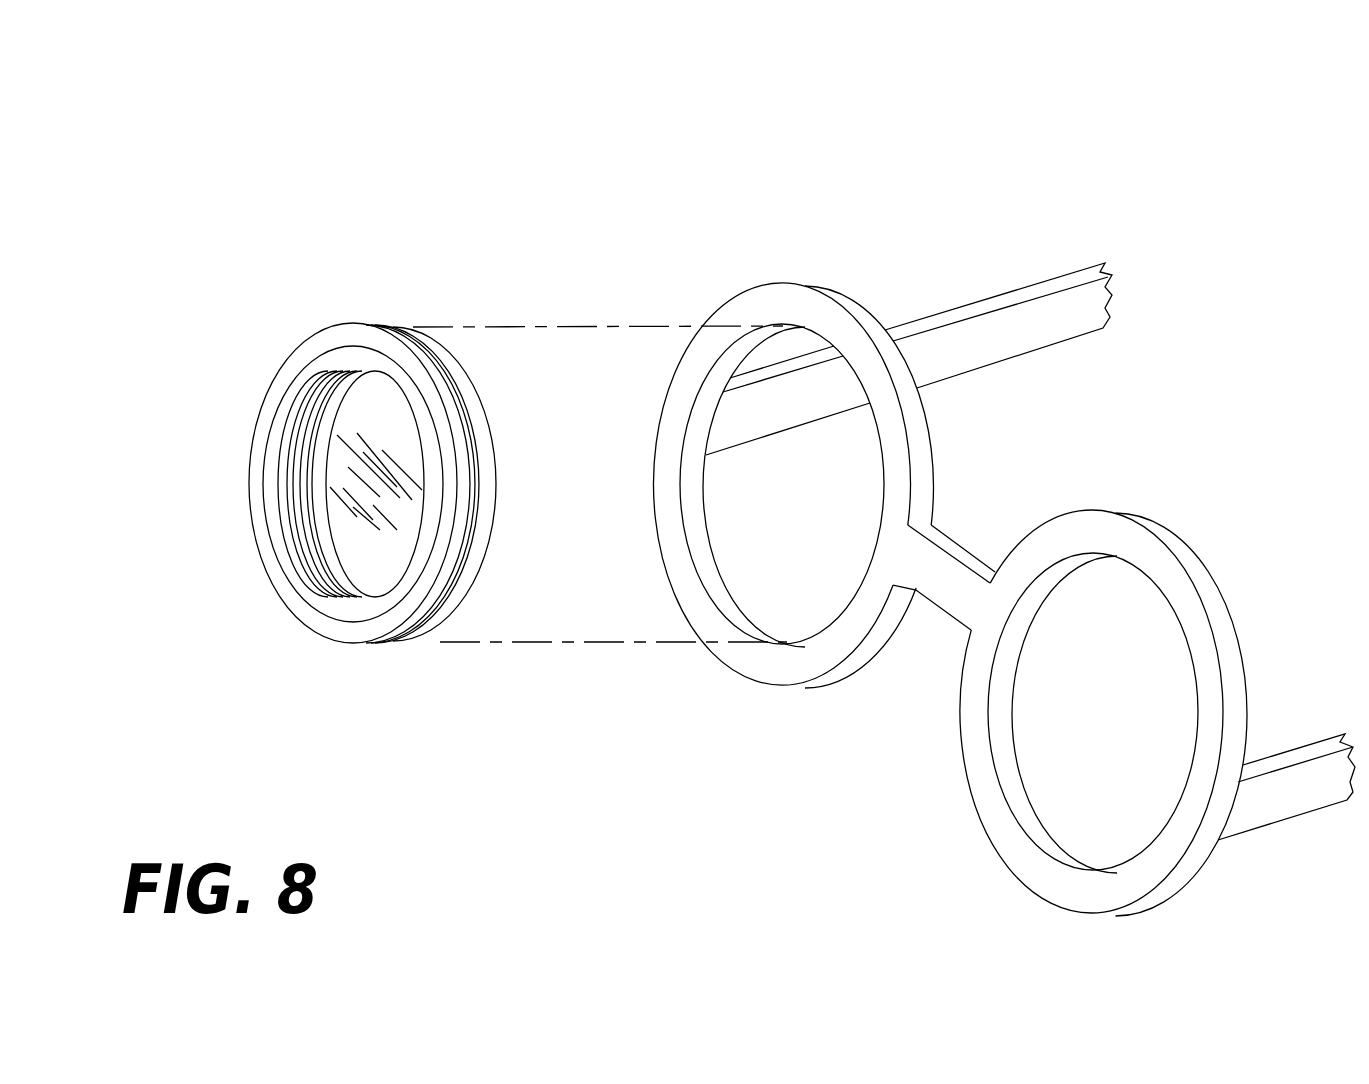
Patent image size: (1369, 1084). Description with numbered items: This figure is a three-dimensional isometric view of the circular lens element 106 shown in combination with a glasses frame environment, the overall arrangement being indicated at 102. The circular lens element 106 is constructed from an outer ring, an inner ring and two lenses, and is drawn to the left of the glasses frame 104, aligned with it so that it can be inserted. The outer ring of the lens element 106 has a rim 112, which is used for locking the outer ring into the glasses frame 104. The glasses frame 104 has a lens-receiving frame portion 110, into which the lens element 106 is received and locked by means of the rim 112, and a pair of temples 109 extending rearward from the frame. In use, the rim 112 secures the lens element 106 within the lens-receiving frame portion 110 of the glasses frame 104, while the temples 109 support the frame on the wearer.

The lens cover assembly 102 is at (130, 158).
The glasses frame 104 is at (742, 155).
The circular lens element 106 is at (263, 349).
The temples 109 is at (930, 313).
The lens-receiving frame portion 110 is at (792, 283).
The rim 112 is at (472, 542).